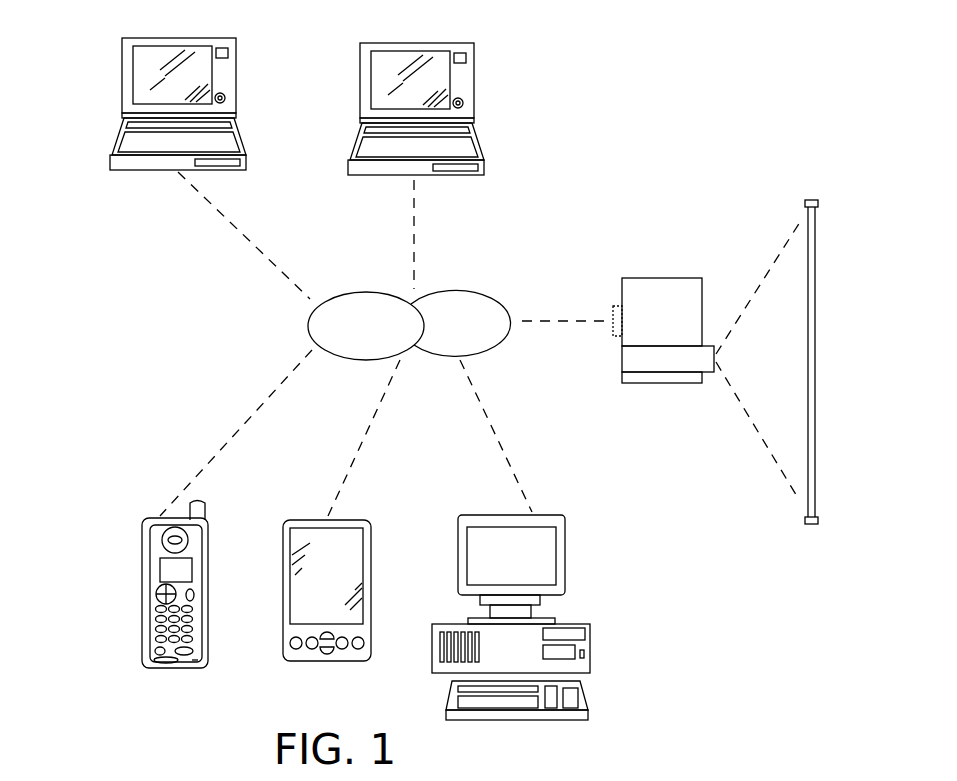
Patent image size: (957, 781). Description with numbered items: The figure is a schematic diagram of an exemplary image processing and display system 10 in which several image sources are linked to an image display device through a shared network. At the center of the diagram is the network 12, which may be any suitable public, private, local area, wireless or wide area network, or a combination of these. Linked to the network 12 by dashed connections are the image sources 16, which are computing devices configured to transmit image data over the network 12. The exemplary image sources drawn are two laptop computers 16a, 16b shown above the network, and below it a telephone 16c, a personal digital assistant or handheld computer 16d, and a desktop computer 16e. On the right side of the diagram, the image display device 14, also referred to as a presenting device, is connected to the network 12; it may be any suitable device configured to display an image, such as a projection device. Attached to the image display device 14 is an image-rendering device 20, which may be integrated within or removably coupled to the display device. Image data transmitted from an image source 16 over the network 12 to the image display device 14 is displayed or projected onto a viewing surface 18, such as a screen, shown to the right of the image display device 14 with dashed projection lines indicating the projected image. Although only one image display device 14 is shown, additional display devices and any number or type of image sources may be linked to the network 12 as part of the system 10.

The image processing and display system 10 is at (610, 160).
The network 12 is at (498, 346).
The image display device 14 is at (660, 362).
The image sources 16 is at (65, 136).
The laptop computer 16a is at (236, 68).
The laptop computer 16b is at (472, 75).
The telephone 16c is at (203, 548).
The personal digital assistant or handheld computer 16d is at (369, 527).
The desktop computer 16e is at (566, 552).
The viewing surface 18 is at (816, 324).
The image-rendering device 20 is at (613, 313).